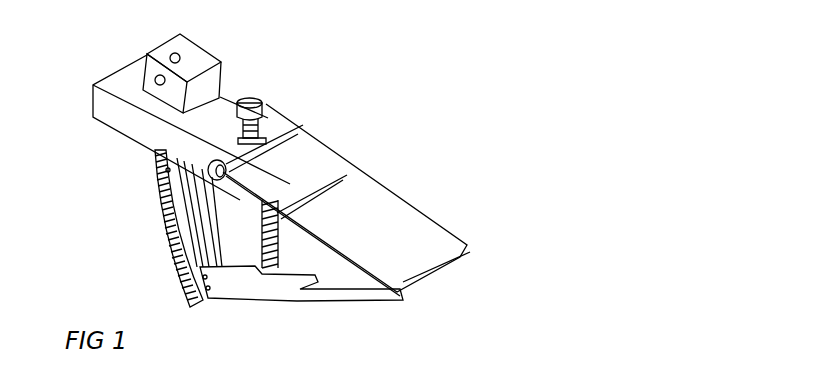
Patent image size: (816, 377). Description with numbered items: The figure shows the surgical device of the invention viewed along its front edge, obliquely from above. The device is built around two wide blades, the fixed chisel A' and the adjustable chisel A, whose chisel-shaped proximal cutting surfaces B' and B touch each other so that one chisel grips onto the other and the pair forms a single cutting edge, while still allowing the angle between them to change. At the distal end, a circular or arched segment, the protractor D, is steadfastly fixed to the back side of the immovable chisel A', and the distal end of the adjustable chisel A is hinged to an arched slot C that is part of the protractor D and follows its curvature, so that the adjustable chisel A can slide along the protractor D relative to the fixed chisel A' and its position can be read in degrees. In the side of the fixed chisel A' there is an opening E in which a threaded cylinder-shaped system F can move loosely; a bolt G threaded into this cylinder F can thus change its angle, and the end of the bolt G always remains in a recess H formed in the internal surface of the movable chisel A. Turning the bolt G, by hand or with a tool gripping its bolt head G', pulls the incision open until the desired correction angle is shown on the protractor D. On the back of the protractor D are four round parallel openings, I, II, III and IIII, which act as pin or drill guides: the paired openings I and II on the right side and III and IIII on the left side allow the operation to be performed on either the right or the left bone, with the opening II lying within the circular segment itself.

The parallel opening I is at (190, 87).
The parallel opening II is at (158, 172).
The parallel opening III is at (222, 70).
The parallel opening IIII is at (163, 43).
The adjustable chisel A is at (399, 291).
The fixed chisel A' is at (457, 200).
The cutting surface B is at (500, 276).
The cutting surface B' is at (731, 276).
The arched slot C is at (190, 221).
The protractor D is at (173, 200).
The opening E is at (228, 164).
The threaded cylinder-shaped system F is at (231, 170).
The bolt G is at (490, 234).
The bolt head G' is at (409, 107).
The recess H is at (397, 292).